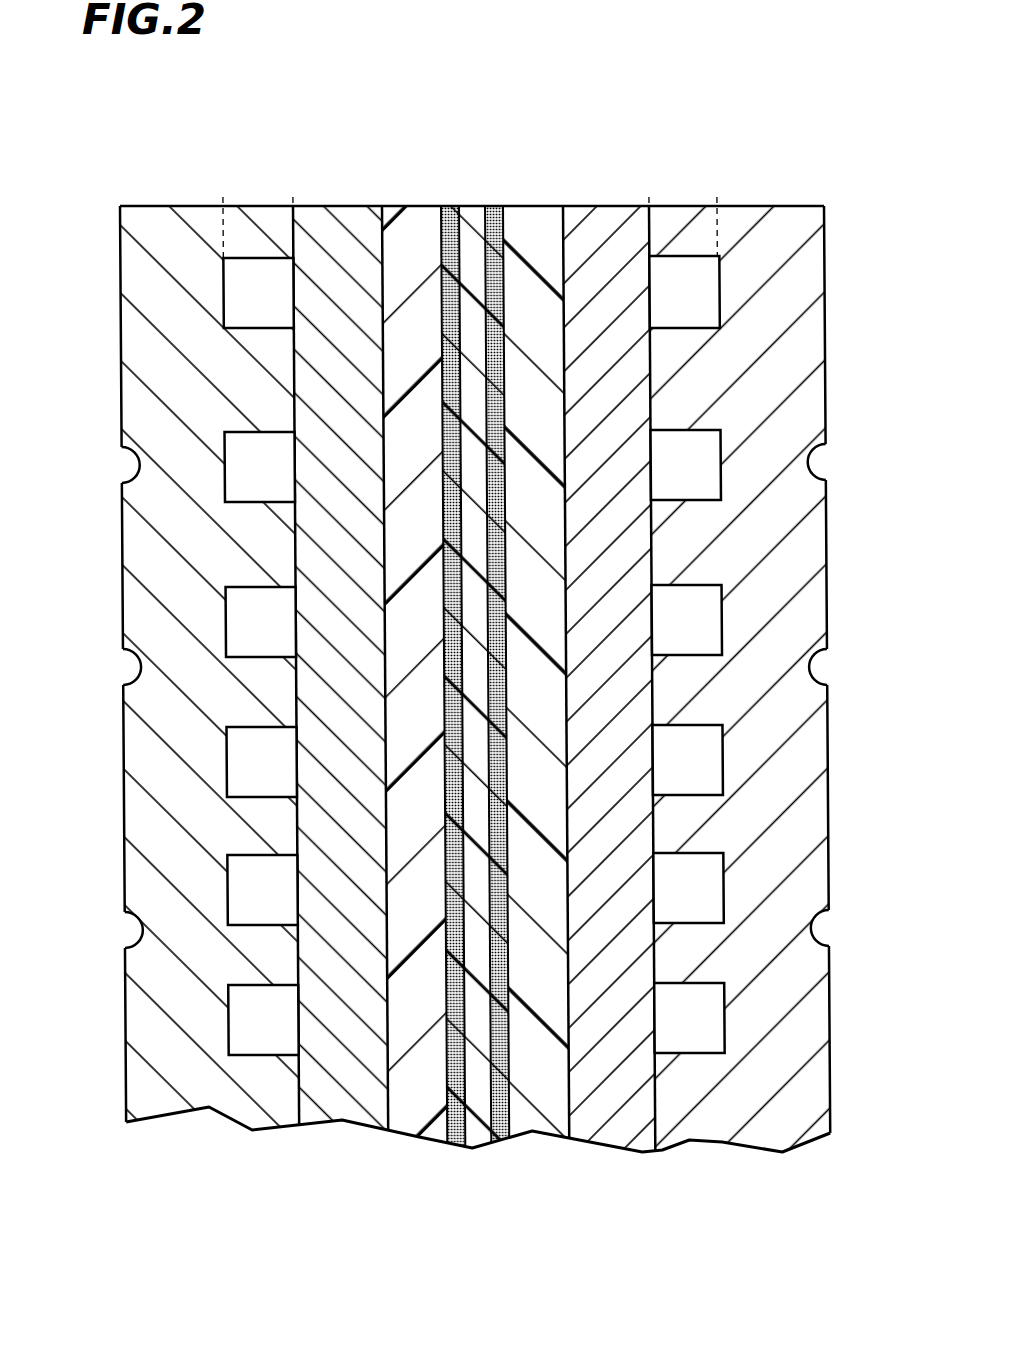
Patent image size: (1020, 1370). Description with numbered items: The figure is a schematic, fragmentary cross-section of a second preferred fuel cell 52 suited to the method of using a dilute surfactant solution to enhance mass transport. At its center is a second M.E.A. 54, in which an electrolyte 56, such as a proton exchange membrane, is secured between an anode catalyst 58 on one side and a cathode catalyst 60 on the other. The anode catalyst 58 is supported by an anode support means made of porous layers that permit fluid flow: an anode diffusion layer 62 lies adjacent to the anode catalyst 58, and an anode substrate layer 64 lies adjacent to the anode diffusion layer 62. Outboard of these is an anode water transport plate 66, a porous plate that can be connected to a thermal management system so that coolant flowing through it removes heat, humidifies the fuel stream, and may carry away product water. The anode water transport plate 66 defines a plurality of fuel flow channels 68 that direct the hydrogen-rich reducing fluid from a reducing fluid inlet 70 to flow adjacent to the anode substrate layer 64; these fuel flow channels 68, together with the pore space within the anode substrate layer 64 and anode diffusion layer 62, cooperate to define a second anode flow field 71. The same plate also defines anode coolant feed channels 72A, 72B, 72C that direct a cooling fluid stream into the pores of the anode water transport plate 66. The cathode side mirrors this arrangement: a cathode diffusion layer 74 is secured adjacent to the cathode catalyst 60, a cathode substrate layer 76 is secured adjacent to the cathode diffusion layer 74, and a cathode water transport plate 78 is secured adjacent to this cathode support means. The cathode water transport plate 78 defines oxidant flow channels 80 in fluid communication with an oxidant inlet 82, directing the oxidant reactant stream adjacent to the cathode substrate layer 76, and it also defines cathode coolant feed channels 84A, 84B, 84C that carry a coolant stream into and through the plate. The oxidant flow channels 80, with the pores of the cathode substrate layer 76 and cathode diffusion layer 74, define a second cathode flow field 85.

The second preferred fuel cell 52 is at (808, 48).
The second M.E.A. 54 is at (479, 711).
The electrolyte 56 is at (477, 1157).
The anode catalyst 58 is at (458, 1150).
The cathode catalyst 60 is at (502, 1142).
The anode diffusion layer 62 is at (408, 1120).
The anode substrate layer 64 is at (328, 1112).
The anode water transport plate 66 is at (228, 1104).
The fuel flow channels 68 is at (248, 455).
The reducing fluid inlet 70 is at (237, 220).
The second anode flow field 71 is at (438, 197).
The anode coolant feed channel 72A is at (124, 466).
The anode coolant feed channel 72B is at (126, 668).
The anode coolant feed channel 72C is at (126, 934).
The cathode diffusion layer 74 is at (542, 1125).
The cathode substrate layer 76 is at (622, 1128).
The cathode water transport plate 78 is at (737, 1125).
The oxidant flow channels 80 is at (700, 452).
The oxidant inlet 82 is at (705, 212).
The cathode coolant feed channel 84A is at (827, 462).
The cathode coolant feed channel 84B is at (827, 667).
The cathode coolant feed channel 84C is at (827, 927).
The second cathode flow field 85 is at (717, 197).